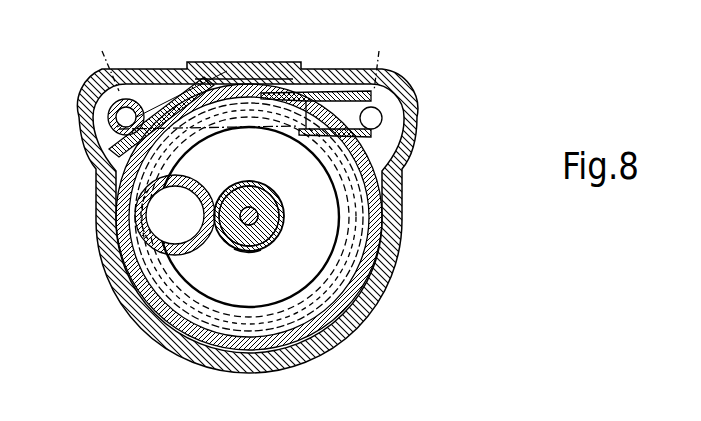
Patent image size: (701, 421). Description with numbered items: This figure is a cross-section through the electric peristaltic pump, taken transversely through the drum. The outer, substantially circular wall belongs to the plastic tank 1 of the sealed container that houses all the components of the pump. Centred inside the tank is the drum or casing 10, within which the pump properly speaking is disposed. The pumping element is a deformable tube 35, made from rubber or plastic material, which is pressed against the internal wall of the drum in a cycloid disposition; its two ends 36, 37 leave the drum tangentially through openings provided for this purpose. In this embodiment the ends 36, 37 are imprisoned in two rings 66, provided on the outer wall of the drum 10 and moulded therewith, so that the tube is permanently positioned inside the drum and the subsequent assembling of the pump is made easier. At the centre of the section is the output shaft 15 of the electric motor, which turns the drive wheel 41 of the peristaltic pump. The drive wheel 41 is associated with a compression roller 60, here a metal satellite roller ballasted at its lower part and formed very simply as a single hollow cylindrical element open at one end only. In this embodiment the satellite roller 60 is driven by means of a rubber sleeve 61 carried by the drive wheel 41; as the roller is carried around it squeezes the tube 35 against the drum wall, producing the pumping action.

The tank 1 is at (392, 233).
The drum or casing 10 is at (380, 170).
The output shaft 15 is at (284, 226).
The deformable tube 35 is at (295, 322).
The end of the deformable tube 36 is at (128, 116).
The end of the deformable tube 37 is at (374, 117).
The drive wheel 41 is at (245, 242).
The compression roller 60 is at (140, 223).
The rubber sleeve 61 is at (240, 248).
The rings 66 is at (242, 60).